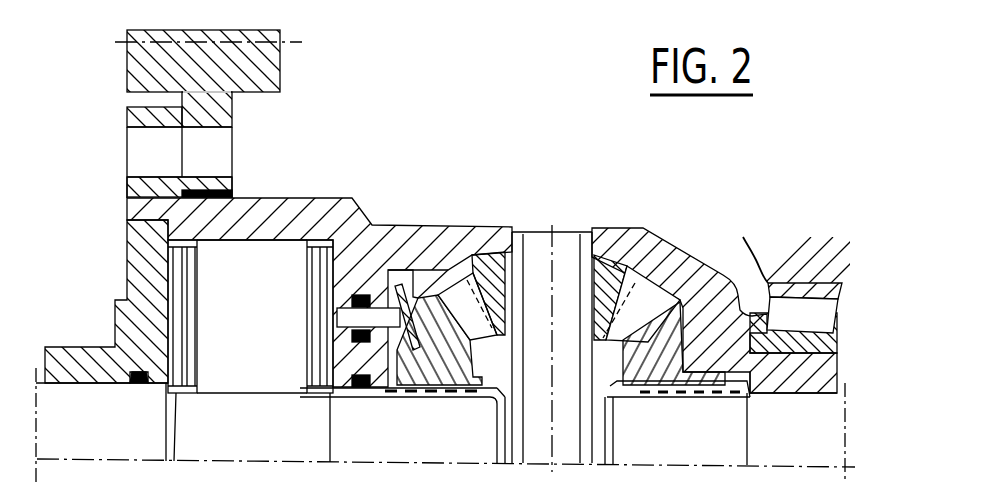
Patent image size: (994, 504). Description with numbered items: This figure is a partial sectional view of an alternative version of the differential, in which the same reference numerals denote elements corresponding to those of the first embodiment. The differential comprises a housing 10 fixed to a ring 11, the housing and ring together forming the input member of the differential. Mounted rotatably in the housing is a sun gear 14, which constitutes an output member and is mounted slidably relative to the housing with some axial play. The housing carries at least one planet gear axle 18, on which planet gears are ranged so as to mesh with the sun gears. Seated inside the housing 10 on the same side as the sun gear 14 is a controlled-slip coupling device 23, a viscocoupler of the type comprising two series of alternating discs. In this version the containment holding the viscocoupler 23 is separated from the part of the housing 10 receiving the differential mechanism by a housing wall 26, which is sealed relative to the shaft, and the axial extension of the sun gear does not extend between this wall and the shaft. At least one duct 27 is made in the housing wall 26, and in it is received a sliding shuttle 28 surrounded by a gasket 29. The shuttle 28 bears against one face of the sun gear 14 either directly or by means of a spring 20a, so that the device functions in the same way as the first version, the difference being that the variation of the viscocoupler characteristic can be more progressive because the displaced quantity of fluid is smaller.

The housing 10 is at (327, 170).
The ring 11 is at (280, 73).
The sun gear 14 is at (433, 396).
The planet gear axle 18 is at (572, 250).
The spring 20a is at (412, 285).
The controlled-slip coupling device 23 is at (258, 268).
The housing wall 26 is at (347, 351).
The duct 27 is at (337, 316).
The sliding shuttle 28 is at (398, 288).
The gasket 29 is at (352, 294).